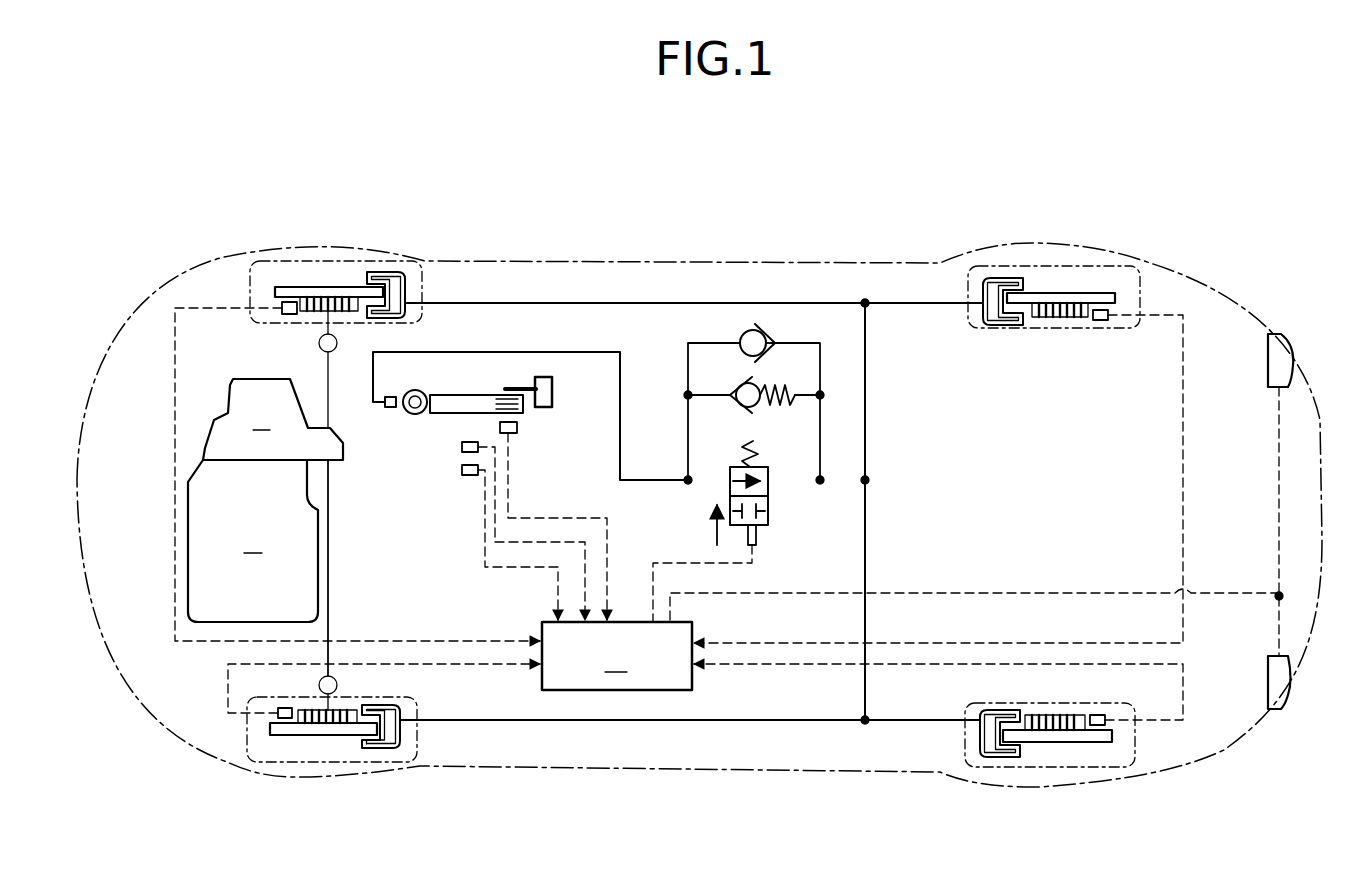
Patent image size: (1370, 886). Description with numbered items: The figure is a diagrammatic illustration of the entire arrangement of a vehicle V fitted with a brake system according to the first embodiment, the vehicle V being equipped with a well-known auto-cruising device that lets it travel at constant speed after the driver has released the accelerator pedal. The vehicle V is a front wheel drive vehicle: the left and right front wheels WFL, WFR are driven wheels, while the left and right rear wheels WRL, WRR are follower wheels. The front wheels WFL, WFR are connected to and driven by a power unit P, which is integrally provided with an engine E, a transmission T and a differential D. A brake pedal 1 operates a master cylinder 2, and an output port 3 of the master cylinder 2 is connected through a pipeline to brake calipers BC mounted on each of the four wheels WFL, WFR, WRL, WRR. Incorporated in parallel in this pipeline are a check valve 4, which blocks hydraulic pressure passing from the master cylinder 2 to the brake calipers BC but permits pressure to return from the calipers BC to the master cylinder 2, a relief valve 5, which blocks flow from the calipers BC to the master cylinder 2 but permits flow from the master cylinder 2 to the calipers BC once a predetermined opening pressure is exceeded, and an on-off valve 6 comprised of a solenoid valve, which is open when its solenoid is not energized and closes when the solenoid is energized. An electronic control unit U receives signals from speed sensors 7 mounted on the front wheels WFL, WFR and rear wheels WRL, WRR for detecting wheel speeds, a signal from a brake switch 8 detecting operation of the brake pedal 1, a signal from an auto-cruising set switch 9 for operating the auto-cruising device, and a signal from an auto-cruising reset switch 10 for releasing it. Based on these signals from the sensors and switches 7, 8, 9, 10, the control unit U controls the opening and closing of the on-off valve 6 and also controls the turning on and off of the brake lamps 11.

The brake pedal 1 is at (552, 392).
The master cylinder 2 is at (447, 400).
The output port 3 is at (390, 407).
The check valve 4 is at (740, 338).
The relief valve 5 is at (758, 378).
The on-off valve 6 is at (768, 505).
The speed sensor 7 is at (282, 308).
The brake switch 8 is at (517, 428).
The auto-cruising set switch 9 is at (462, 448).
The auto-cruising reset switch 10 is at (462, 472).
The brake lamp 11 is at (1284, 362).
The vehicle V is at (728, 238).
The electronic control unit U is at (617, 656).
The power unit P is at (286, 504).
The engine E is at (253, 541).
The transmission T is at (273, 419).
The differential D is at (340, 463).
The brake caliper BC is at (352, 272).
The right front wheel WFR is at (426, 290).
The left front wheel WFL is at (350, 762).
The right rear wheel WRR is at (1140, 296).
The left rear wheel WRL is at (960, 762).